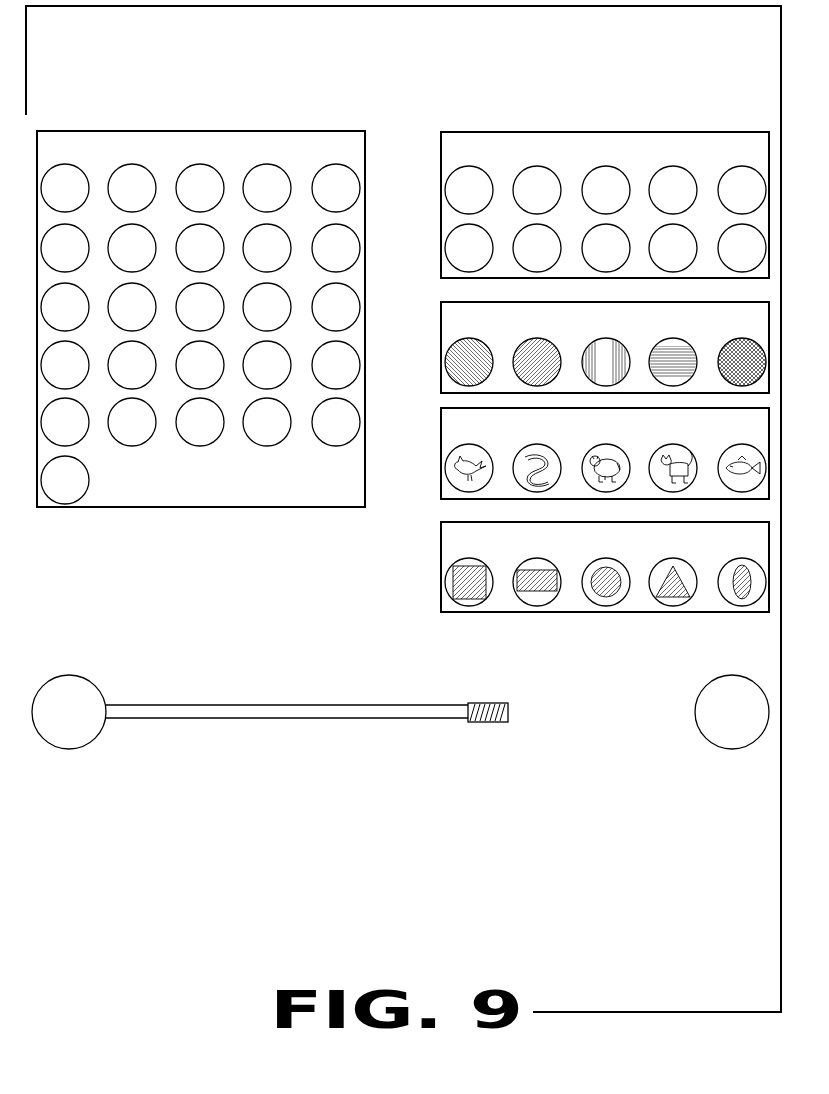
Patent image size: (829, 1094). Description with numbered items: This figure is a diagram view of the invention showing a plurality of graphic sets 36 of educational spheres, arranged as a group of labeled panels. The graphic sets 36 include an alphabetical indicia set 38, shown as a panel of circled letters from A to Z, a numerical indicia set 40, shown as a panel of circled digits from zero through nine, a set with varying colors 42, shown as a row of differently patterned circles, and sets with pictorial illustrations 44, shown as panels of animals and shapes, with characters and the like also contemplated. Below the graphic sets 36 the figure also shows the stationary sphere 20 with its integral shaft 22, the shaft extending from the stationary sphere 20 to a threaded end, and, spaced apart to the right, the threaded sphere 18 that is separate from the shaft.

The graphic sets 36 is at (518, 111).
The alphabetical indicia set 38 is at (210, 507).
The numerical indicia set 40 is at (441, 215).
The set with varying colors 42 is at (441, 353).
The sets with pictorial illustrations 44 is at (441, 478).
The threaded sphere 18 is at (696, 726).
The stationary sphere 20 is at (82, 748).
The integral shaft 22 is at (227, 718).